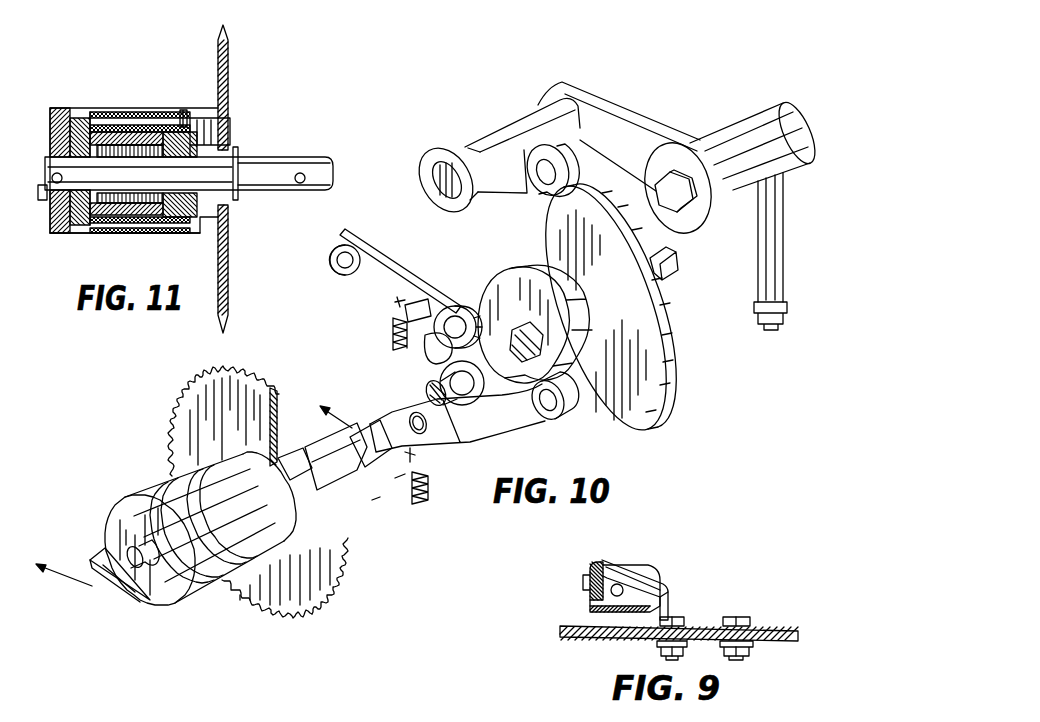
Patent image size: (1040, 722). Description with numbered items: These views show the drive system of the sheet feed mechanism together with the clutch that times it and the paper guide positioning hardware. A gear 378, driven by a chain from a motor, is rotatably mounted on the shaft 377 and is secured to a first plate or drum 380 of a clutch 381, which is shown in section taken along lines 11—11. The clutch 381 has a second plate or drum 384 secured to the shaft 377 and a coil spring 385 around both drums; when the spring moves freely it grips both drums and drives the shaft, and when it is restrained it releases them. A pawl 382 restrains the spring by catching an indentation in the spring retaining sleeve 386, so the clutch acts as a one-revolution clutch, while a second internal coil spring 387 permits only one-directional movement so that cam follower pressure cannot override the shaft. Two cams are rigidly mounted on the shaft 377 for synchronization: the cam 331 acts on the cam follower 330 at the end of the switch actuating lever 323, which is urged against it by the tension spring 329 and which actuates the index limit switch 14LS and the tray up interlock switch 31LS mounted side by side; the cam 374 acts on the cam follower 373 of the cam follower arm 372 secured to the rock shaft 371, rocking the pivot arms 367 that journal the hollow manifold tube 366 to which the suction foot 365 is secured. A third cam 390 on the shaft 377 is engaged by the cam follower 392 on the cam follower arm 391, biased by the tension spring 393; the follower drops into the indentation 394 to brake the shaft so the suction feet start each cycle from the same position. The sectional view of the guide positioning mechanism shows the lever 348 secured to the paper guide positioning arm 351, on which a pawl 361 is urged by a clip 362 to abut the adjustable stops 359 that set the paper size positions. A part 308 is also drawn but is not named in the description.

In FIG. 10, the clevis 308 is at (302, 510).
In FIG. 10, the switch actuating lever 323 is at (488, 433).
In FIG. 10, the tension spring 329 is at (427, 483).
In FIG. 10, the cam follower 330 is at (557, 417).
In FIG. 10, the cam 331 is at (508, 270).
In FIG. 10, the lever 348 is at (302, 710).
In FIG. 9, the paper guide positioning arm 351 is at (597, 613).
In FIG. 9, the adjustable stops 359 is at (670, 617).
In FIG. 9, the pawl 361 is at (667, 602).
In FIG. 9, the clip 362 is at (598, 565).
In FIG. 10, the suction foot 365 is at (760, 244).
In FIG. 10, the hollow manifold tube 366 is at (733, 132).
In FIG. 10, the pivot arms 367 is at (627, 114).
In FIG. 10, the rock shaft 371 is at (523, 130).
In FIG. 10, the cam follower arm 372 is at (452, 146).
In FIG. 10, the cam follower 373 is at (537, 197).
In FIG. 10, the cam 374 is at (677, 364).
In FIG. 11, the shaft 377 is at (284, 166).
In FIG. 10, the shaft 377 is at (672, 272).
In FIG. 11, the gear 378 is at (223, 179).
In FIG. 10, the gear 378 is at (313, 612).
In FIG. 11, the first plate or drum 380 is at (198, 117).
In FIG. 11, the clutch 381 is at (90, 248).
In FIG. 10, the clutch 381 is at (127, 487).
In FIG. 10, the pawl 382 is at (110, 588).
In FIG. 11, the second plate or drum 384 is at (130, 212).
In FIG. 11, the coil spring 385 is at (134, 130).
In FIG. 11, the spring retaining sleeve 386 is at (74, 108).
In FIG. 11, the second internal coil spring 387 is at (62, 142).
In FIG. 10, the third cam 390 is at (428, 374).
In FIG. 10, the cam follower arm 391 is at (367, 281).
In FIG. 10, the cam follower 392 is at (473, 278).
In FIG. 10, the tension spring 393 is at (392, 334).
In FIG. 10, the indentation 394 is at (423, 362).
In FIG. 10, the index limit switch 14LS is at (380, 495).
In FIG. 10, the tray up interlock switch 31LS is at (372, 505).
In FIG. 10, the section lines 11 is at (186, 485).